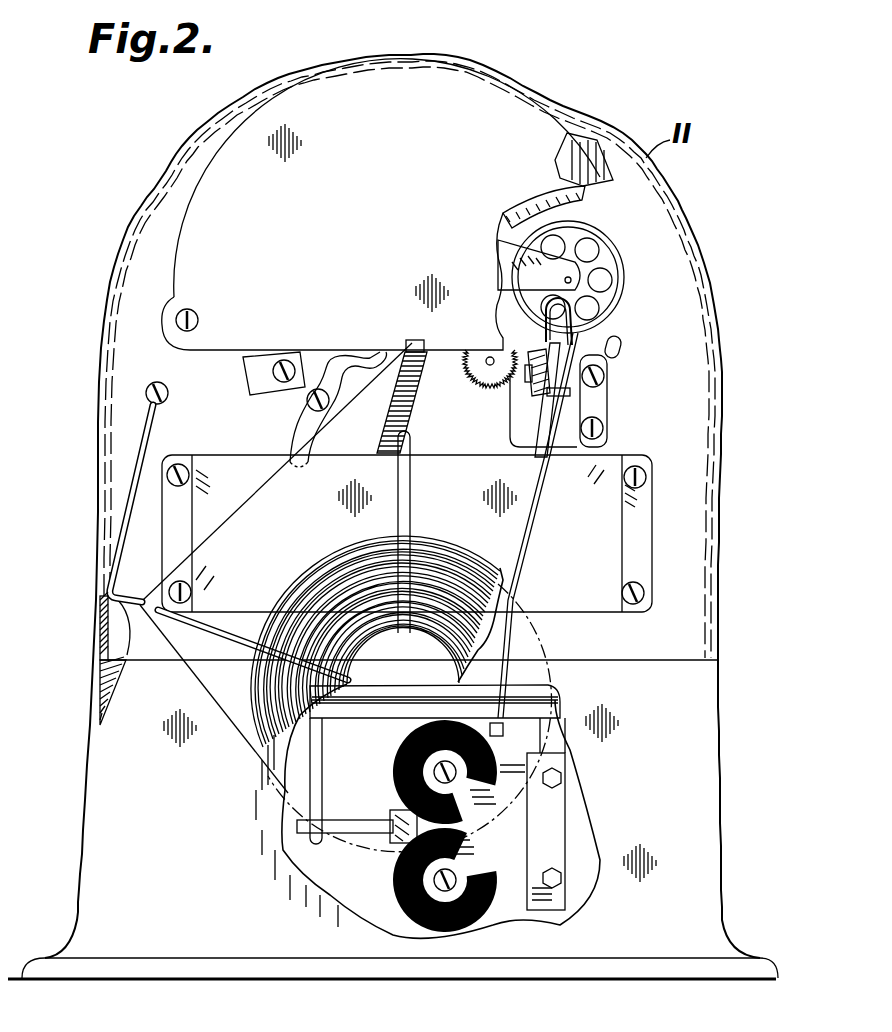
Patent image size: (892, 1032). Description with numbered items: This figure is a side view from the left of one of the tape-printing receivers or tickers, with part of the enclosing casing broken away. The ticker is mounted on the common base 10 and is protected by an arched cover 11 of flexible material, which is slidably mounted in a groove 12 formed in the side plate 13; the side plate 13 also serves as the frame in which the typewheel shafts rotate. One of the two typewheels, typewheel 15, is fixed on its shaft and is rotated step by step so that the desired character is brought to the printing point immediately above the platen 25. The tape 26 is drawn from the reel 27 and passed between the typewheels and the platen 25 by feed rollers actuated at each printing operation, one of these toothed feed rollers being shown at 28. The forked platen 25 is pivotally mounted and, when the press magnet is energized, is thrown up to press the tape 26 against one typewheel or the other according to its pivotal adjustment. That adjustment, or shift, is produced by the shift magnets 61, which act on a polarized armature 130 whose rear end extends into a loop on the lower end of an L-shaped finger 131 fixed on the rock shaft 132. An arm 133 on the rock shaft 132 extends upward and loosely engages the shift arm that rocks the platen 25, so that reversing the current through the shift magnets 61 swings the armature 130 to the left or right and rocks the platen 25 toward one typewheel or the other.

The base 10 is at (90, 855).
The arched cover 11 is at (103, 628).
The groove 12 is at (110, 601).
The side plate 13 is at (99, 303).
The typewheel 15 is at (613, 250).
The platen 25 is at (548, 340).
The tape 26 is at (600, 348).
The reel 27 is at (377, 641).
The feed roller 28 is at (526, 388).
The shift magnet 61 is at (542, 831).
The armature 130 is at (398, 812).
The L-shaped finger 131 is at (322, 779).
The rock shaft 132 is at (360, 726).
The arm 133 is at (508, 650).